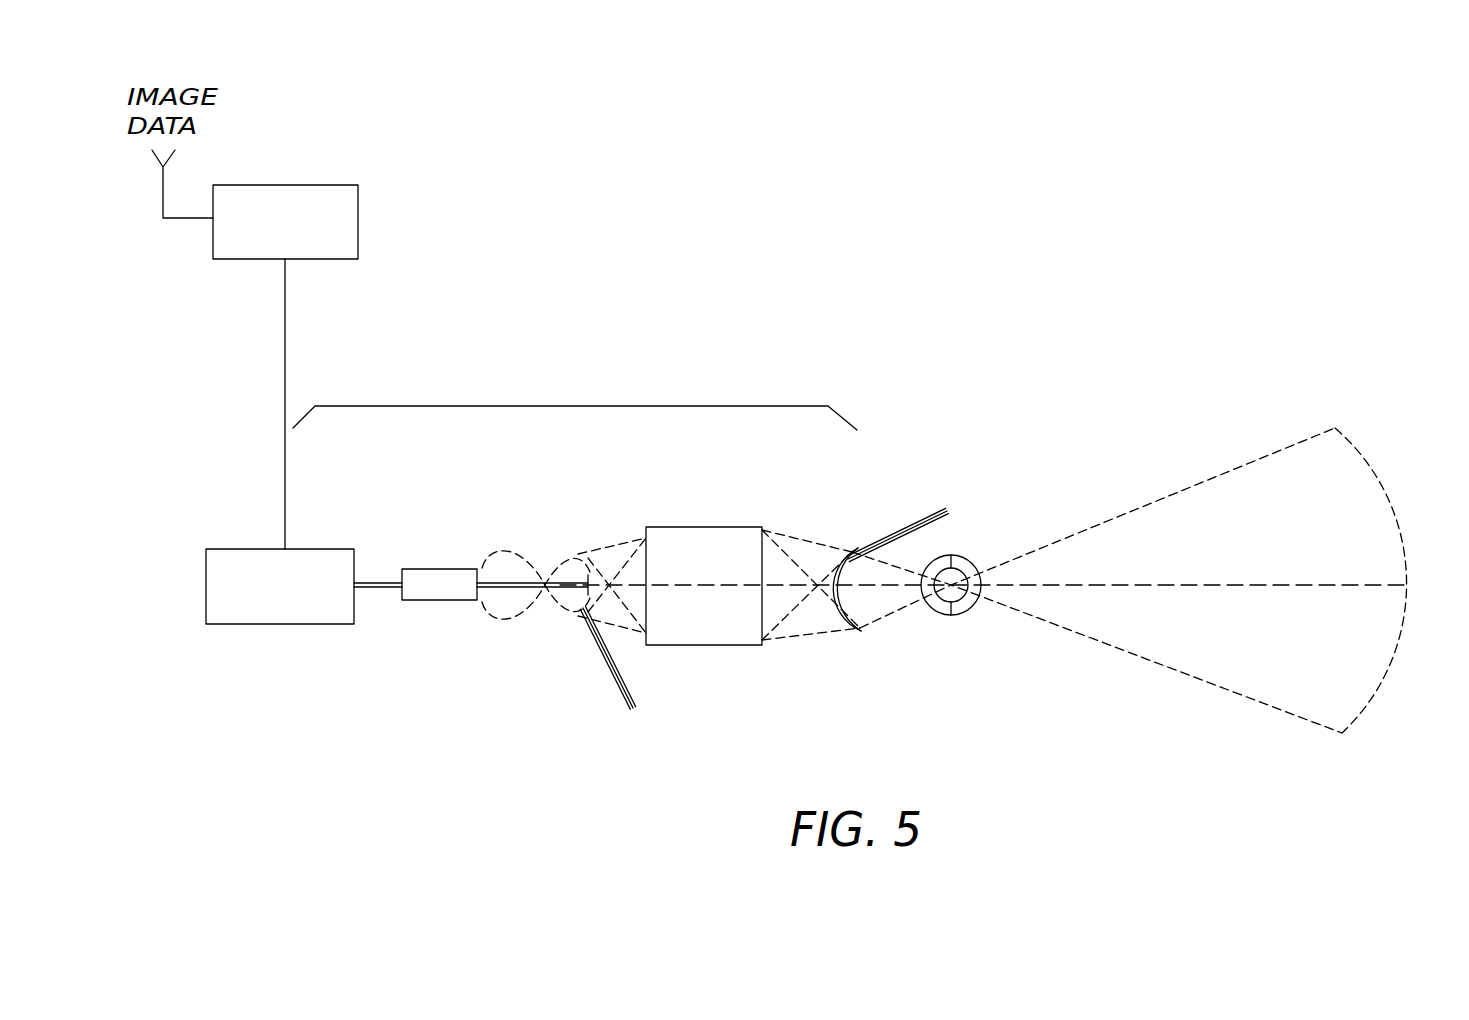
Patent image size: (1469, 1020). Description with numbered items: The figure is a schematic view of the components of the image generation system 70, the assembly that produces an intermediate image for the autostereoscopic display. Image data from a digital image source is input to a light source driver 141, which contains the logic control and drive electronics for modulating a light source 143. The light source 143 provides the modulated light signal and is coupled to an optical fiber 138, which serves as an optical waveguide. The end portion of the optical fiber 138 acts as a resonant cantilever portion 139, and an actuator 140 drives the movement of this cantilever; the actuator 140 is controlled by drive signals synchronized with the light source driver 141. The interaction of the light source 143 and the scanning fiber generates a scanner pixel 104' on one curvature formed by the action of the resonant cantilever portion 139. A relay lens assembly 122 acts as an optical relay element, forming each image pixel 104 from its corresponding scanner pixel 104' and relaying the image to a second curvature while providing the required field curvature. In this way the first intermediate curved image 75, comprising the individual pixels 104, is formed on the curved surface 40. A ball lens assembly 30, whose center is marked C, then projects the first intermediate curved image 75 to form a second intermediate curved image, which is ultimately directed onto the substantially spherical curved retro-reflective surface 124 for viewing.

The light source driver 141 is at (333, 185).
The light source 143 is at (280, 624).
The optical fiber 138 is at (383, 578).
The actuator 140 is at (425, 600).
The resonant cantilever portion 139 is at (520, 578).
The scanner pixel 104' is at (629, 684).
The relay lens assembly 122 is at (689, 527).
The image generation system 70 is at (584, 406).
The curved surface 40 is at (848, 552).
The first intermediate curved image 75 is at (856, 610).
The image pixel 104 is at (915, 500).
The ball lens assembly 30 is at (962, 618).
The center of scanner C is at (968, 597).
The curved retro-reflective surface 124 is at (1388, 667).